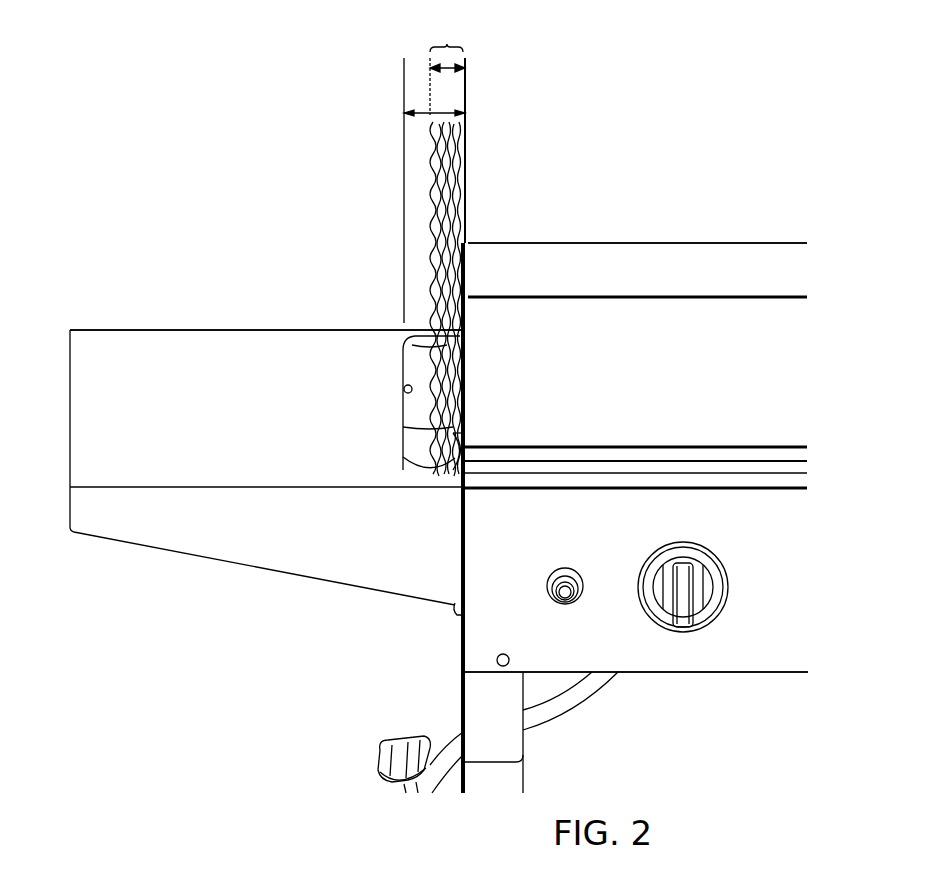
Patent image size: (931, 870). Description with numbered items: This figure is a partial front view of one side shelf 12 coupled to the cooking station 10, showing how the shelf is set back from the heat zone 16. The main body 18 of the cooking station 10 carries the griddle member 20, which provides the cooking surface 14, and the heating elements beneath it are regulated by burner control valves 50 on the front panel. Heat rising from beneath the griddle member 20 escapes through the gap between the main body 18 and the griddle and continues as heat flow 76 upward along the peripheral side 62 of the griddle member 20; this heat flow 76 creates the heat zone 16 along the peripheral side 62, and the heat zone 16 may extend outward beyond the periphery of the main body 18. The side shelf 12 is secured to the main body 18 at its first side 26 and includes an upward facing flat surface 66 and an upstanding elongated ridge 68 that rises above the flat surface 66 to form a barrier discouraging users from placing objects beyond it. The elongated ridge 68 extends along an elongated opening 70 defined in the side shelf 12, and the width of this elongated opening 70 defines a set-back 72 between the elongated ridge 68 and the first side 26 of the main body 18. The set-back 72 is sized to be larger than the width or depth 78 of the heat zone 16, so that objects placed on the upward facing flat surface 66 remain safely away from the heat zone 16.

The cooking station 10 is at (713, 728).
The side shelf 12 is at (127, 325).
The cooking surface 14 is at (558, 307).
The heat zone 16 is at (449, 33).
The main body 18 is at (448, 664).
The griddle member 20 is at (687, 243).
The first side 26 is at (460, 641).
The burner control valves 50 is at (700, 572).
The peripheral side 62 is at (452, 228).
The upward facing flat surface 66 is at (222, 343).
The upstanding elongated ridge 68 is at (403, 428).
The elongated opening 70 is at (404, 387).
The set-back 72 is at (445, 114).
The heat flow 76 is at (455, 178).
The width or depth 78 is at (447, 66).